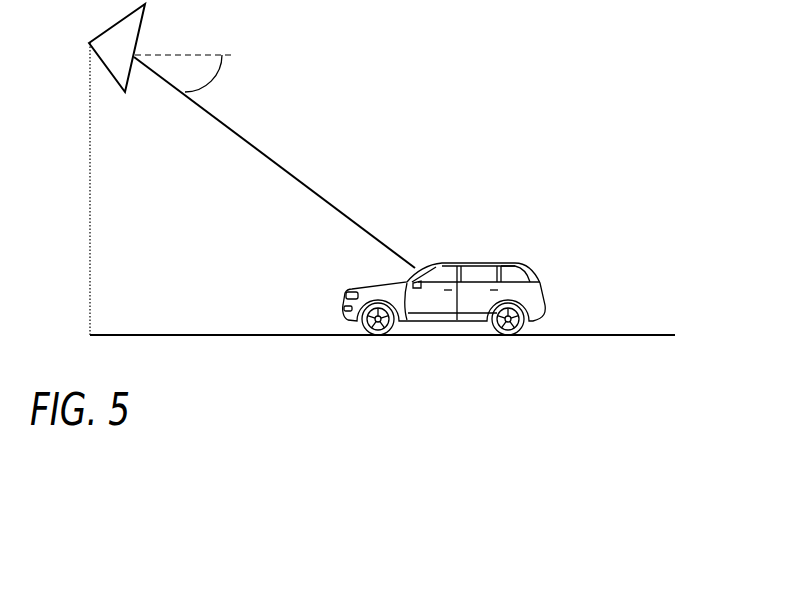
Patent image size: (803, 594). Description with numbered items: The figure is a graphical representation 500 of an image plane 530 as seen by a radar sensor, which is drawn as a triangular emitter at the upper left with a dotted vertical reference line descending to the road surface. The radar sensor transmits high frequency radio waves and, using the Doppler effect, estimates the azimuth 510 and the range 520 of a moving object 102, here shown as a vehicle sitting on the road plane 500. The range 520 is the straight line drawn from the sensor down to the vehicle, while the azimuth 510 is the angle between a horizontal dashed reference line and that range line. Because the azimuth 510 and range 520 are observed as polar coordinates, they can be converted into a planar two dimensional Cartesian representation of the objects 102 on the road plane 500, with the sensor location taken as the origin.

The moving object 102 is at (545, 290).
The graphical representation / road plane 500 is at (525, 362).
The azimuth (θ) 510 is at (242, 78).
The range (r) 520 is at (389, 205).
The image plane 530 is at (165, 212).